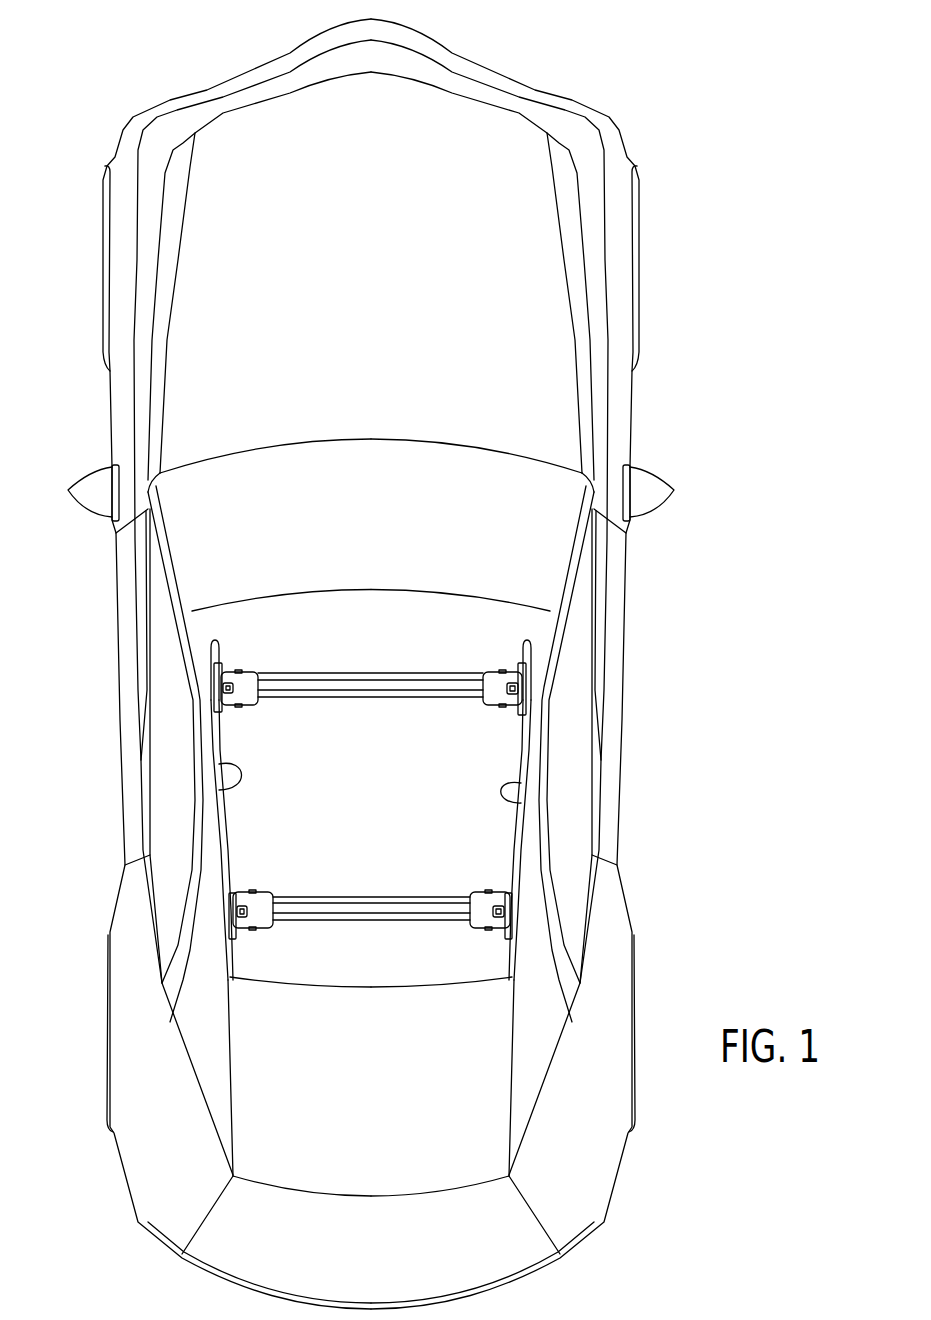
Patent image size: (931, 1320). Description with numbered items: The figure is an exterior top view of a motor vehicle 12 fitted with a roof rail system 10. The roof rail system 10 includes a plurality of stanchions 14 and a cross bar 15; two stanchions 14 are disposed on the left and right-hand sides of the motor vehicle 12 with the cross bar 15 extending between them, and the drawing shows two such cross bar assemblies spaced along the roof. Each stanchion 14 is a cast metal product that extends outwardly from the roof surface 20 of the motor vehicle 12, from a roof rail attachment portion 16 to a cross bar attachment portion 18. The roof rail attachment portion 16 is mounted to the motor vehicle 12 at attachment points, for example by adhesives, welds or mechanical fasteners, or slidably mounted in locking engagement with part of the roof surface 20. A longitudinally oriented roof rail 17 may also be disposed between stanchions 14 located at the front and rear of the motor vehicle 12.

The roof rail system 10 is at (378, 770).
The motor vehicle 12 is at (621, 417).
The stanchion 14 is at (528, 665).
The cross bar 15 is at (403, 681).
The roof rail attachment portion 16 is at (533, 692).
The roof rail 17 is at (219, 789).
The cross bar attachment portion 18 is at (262, 682).
The roof surface 20 is at (495, 737).